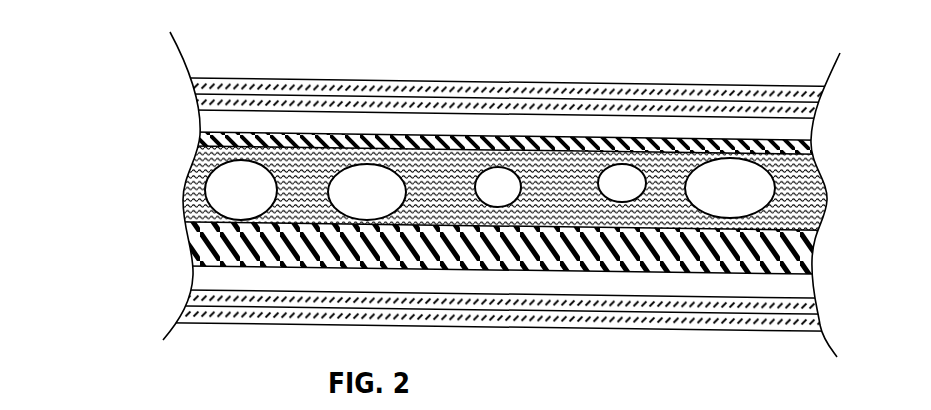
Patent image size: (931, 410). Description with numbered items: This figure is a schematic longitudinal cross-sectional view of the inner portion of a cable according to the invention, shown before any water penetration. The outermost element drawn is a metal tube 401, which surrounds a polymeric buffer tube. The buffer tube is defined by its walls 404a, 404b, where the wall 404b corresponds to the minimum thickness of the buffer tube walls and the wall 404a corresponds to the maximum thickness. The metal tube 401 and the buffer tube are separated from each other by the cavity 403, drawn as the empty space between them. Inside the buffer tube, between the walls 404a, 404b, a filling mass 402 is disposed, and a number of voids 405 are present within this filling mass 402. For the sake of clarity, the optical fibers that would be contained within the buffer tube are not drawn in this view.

The metal tube 401 is at (305, 90).
The filling mass 402 is at (548, 167).
The cavity 403 is at (398, 123).
The wall of buffer tube 404a is at (220, 245).
The wall of buffer tube 404b is at (747, 153).
The voids 405 is at (250, 198).